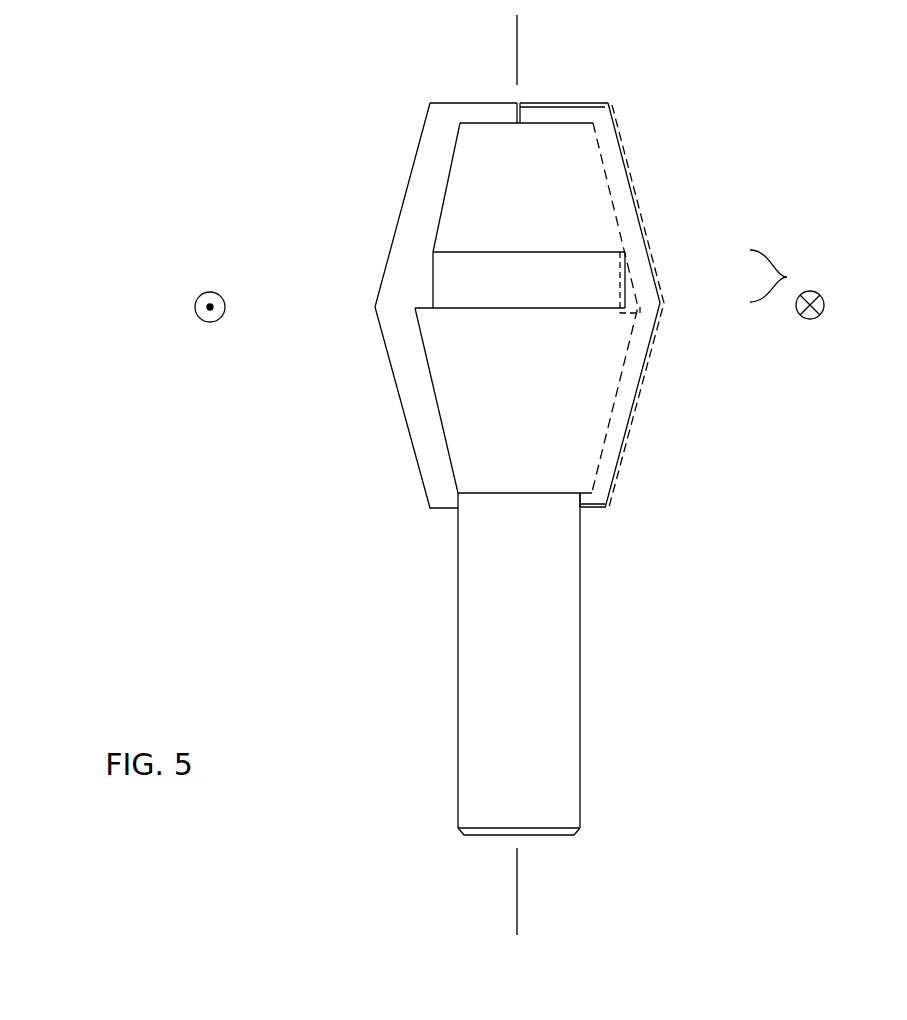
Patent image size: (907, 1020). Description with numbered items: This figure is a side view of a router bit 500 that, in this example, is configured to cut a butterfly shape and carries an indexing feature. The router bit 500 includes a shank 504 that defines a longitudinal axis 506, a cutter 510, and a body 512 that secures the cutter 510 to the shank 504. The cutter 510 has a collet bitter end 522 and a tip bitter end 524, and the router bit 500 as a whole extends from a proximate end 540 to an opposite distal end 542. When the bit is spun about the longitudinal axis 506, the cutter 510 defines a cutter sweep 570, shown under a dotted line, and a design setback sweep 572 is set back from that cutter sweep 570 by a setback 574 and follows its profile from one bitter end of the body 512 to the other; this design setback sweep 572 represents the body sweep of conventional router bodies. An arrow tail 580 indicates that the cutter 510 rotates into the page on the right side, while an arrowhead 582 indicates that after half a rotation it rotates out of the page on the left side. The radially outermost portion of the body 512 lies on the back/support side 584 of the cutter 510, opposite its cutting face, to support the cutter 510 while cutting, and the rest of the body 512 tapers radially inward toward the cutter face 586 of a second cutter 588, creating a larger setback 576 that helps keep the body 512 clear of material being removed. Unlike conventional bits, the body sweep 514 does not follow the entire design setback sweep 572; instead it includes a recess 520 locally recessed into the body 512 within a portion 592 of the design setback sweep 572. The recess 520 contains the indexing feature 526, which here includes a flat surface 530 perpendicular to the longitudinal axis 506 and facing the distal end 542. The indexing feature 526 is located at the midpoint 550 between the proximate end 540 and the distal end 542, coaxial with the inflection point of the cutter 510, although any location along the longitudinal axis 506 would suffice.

The router bit 500 is at (342, 148).
The shank 504 is at (540, 727).
The longitudinal axis 506 is at (518, 50).
The cutter 510 is at (598, 117).
The body 512 is at (545, 411).
The body sweep 514 is at (613, 277).
The recess 520 is at (630, 282).
The collet bitter end 522 is at (598, 510).
The tip bitter end 524 is at (448, 100).
The indexing feature 526 is at (628, 305).
The flat surface 530 is at (679, 319).
The proximate end 540 is at (492, 837).
The distal end 542 is at (508, 100).
The midpoint 550 is at (662, 308).
The cutter sweep 570 is at (625, 160).
The design setback sweep 572 is at (620, 225).
The setback 574 is at (580, 200).
The larger setback 576 is at (408, 430).
The arrow tail 580 is at (823, 323).
The arrowhead 582 is at (220, 327).
The back/support side 584 is at (636, 306).
The cutter face 586 is at (395, 276).
The second cutter 588 is at (395, 305).
The portion 592 is at (787, 276).